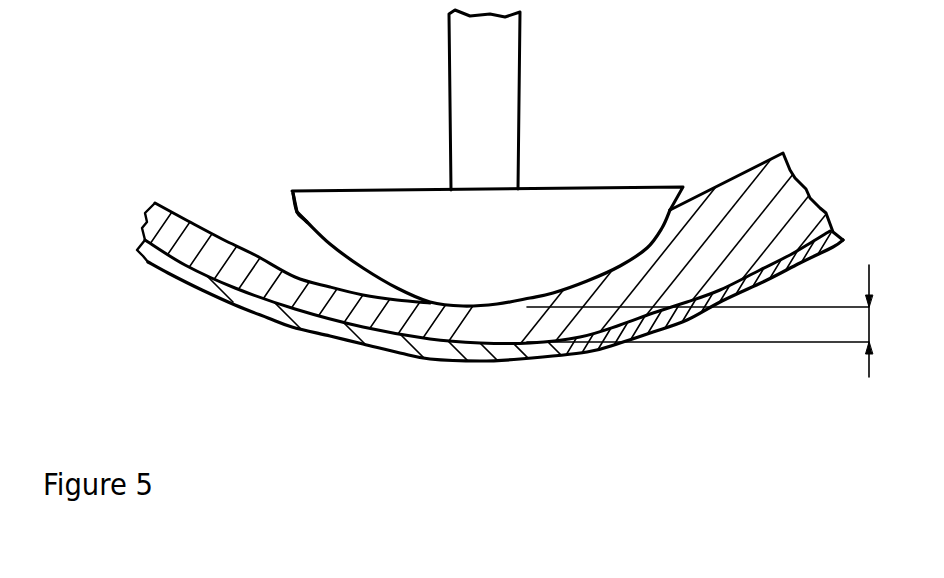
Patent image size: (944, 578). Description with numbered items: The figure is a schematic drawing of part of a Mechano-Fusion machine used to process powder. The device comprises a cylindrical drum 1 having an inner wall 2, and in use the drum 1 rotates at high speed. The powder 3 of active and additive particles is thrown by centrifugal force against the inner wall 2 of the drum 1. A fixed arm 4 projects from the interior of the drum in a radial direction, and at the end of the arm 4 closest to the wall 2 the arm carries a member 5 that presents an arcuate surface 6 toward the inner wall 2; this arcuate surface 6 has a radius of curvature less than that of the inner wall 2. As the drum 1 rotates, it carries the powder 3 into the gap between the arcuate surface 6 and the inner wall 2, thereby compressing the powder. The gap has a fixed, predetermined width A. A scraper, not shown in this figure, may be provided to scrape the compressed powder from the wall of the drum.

The cylindrical drum 1 is at (522, 269).
The inner wall 2 is at (790, 255).
The powder 3 is at (747, 214).
The fixed arm 4 is at (500, 57).
The member 5 is at (593, 199).
The arcuate surface 6 is at (300, 215).
The gap width A is at (710, 321).